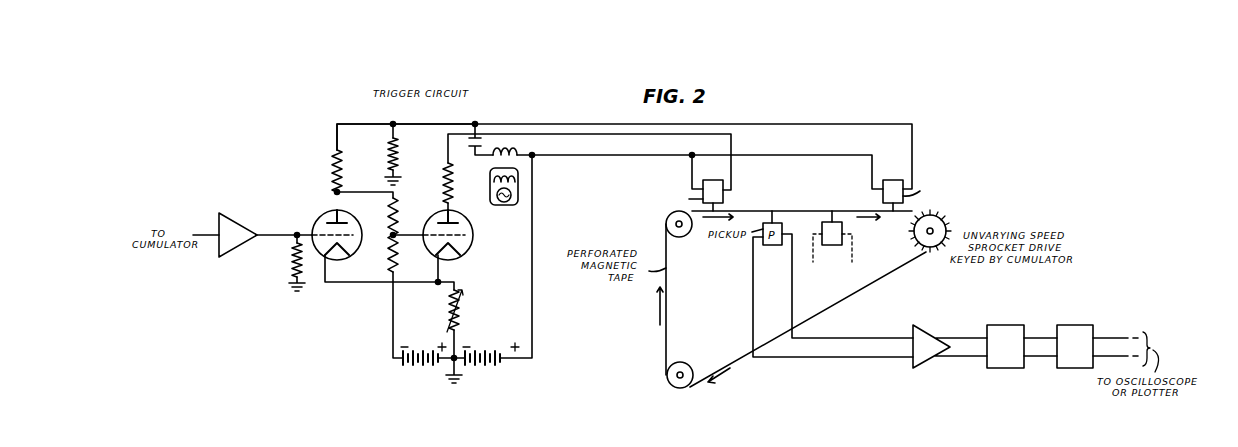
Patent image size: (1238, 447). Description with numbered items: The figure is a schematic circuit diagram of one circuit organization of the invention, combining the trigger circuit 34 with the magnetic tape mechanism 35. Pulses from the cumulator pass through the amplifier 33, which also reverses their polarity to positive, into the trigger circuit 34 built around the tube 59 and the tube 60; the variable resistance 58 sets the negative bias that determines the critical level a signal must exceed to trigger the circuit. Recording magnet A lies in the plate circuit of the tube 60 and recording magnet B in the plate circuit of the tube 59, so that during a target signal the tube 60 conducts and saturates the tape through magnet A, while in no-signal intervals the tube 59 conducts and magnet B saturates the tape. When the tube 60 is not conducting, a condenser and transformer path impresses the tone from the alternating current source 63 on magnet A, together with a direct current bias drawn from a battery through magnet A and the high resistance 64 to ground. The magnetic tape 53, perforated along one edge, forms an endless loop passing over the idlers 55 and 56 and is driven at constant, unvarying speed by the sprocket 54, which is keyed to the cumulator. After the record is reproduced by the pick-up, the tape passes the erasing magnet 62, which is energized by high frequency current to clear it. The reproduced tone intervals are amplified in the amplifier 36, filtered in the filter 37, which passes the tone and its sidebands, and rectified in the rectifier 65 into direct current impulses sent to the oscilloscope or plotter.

The amplifier 33 is at (239, 213).
The trigger circuit 34 is at (432, 119).
The magnetic tape recording and reproducing mechanism 35 is at (870, 104).
The amplifier 36 is at (911, 330).
The filter 37 is at (986, 330).
The magnetic tape 53 is at (745, 355).
The sprocket 54 is at (947, 222).
The idler 55 is at (667, 384).
The idler 56 is at (666, 224).
The variable resistance 58 is at (466, 308).
The tube 59 is at (470, 253).
The tube 60 is at (331, 212).
The erasing magnet 62 is at (843, 229).
The source of alternating current 63 is at (513, 207).
The high resistance 64 is at (401, 151).
The rectifier 65 is at (1094, 331).